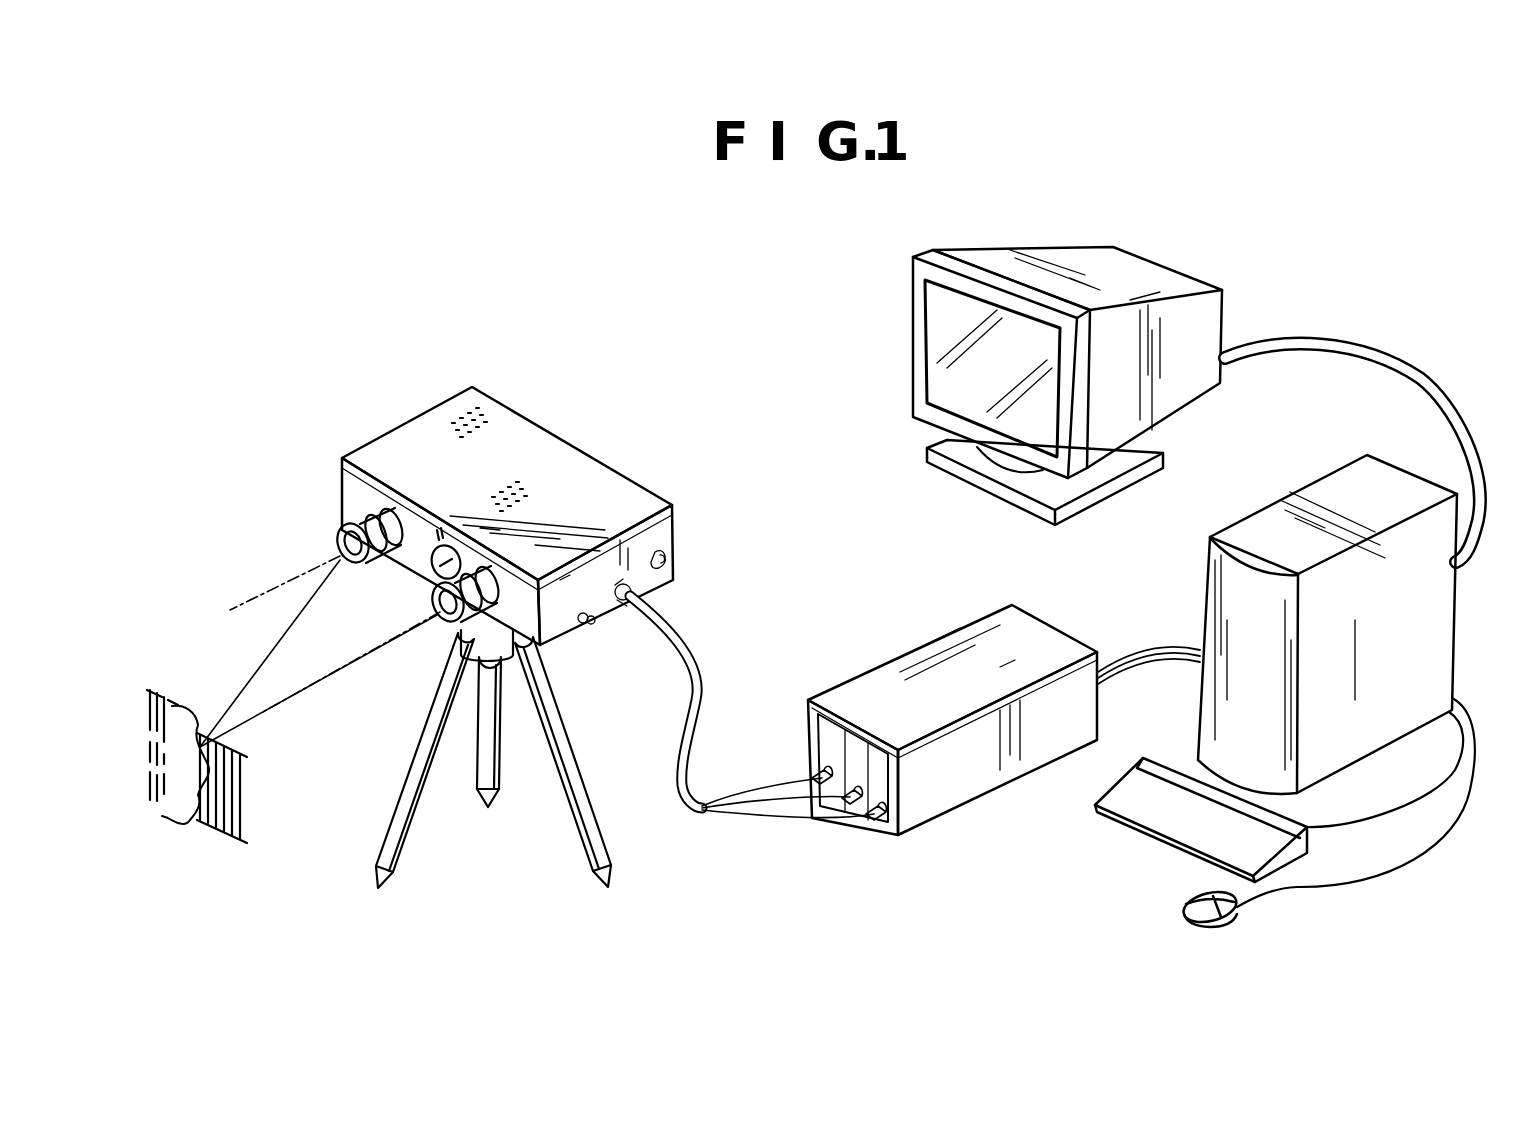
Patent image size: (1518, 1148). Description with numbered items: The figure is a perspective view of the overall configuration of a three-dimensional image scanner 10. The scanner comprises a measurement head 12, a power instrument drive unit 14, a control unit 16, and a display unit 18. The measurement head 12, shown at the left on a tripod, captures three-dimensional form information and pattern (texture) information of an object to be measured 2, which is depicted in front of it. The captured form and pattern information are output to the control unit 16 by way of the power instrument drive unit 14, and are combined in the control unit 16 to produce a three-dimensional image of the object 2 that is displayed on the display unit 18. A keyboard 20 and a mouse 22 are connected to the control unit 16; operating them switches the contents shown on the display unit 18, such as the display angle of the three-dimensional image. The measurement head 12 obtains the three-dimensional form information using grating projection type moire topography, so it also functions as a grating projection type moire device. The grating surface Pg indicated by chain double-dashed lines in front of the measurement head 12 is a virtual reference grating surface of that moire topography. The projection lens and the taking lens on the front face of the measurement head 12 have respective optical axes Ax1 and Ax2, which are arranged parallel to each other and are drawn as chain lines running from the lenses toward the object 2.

The three-dimensional image scanner 10 is at (678, 243).
The measurement head 12 is at (580, 443).
The power instrument drive unit 14 is at (920, 632).
The control unit 16 is at (1200, 602).
The display unit 18 is at (905, 343).
The keyboard 20 is at (1150, 808).
The mouse 22 is at (1180, 920).
The object to be measured 2 is at (186, 825).
The grating surface Pg is at (252, 790).
The optical axis of the projection lens Ax1 is at (246, 600).
The optical axis of the taking lens Ax2 is at (362, 663).